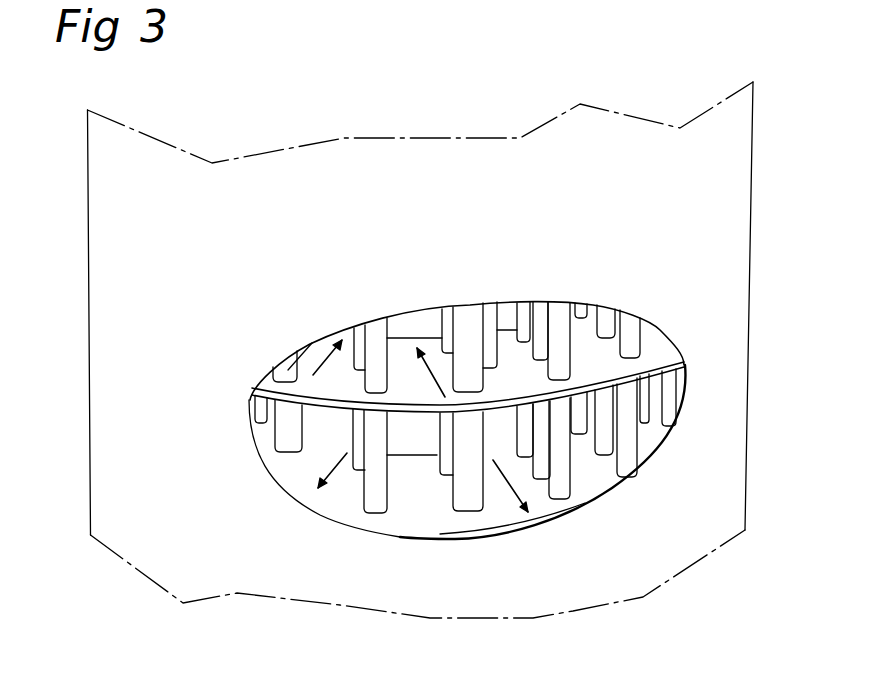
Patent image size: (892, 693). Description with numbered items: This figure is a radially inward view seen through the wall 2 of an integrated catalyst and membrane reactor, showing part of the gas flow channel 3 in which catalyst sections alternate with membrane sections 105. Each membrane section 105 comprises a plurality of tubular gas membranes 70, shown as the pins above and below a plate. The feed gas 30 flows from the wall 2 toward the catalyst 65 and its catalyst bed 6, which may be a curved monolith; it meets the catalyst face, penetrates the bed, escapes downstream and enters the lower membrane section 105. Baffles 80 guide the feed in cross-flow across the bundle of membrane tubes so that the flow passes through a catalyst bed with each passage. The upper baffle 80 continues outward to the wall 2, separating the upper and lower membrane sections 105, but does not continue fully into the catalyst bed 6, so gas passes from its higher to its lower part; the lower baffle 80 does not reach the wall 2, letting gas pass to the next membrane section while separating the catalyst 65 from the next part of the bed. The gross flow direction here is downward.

The wall 2 is at (118, 262).
The gas flow channel 3 is at (526, 516).
The catalyst bed 6 is at (406, 328).
The feed gas 30 is at (267, 378).
The catalyst 65 is at (425, 325).
The tubular gas membranes 70 is at (327, 368).
The baffle 80 is at (500, 342).
The membrane section 105 is at (527, 378).